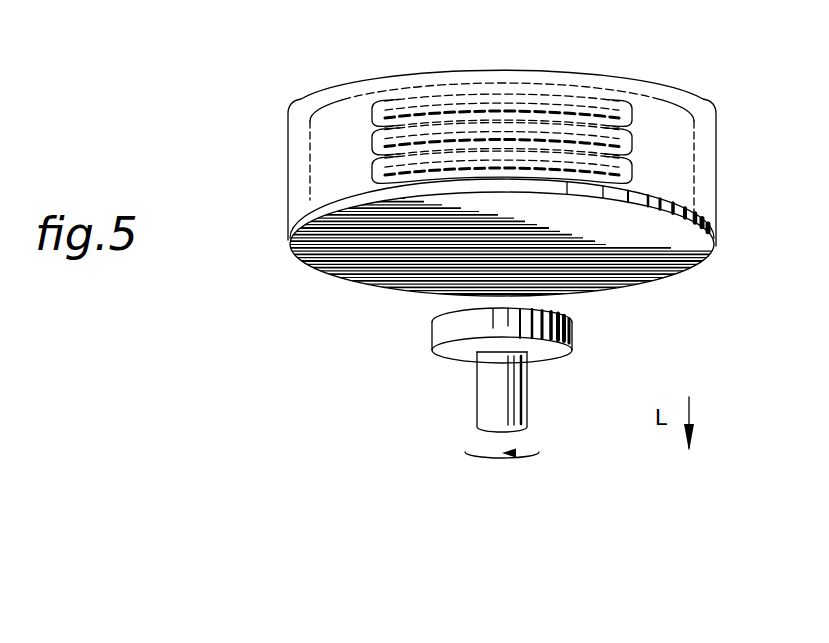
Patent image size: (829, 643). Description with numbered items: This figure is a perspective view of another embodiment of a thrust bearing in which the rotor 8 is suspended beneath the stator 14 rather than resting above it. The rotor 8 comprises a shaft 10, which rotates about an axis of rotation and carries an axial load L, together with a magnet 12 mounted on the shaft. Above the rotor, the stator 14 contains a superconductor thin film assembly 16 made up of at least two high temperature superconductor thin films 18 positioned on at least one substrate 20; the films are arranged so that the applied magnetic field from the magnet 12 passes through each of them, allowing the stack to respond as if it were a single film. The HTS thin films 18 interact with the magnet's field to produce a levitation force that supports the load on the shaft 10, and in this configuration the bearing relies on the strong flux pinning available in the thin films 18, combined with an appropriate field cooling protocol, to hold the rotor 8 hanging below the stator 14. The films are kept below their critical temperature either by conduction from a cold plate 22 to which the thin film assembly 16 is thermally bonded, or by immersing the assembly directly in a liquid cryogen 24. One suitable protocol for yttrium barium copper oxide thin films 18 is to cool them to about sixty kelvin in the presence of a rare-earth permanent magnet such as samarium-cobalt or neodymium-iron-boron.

The rotor 8 is at (329, 310).
The shaft 10 is at (526, 405).
The magnet 12 is at (438, 328).
The stator 14 is at (273, 112).
The superconductor thin film assembly 16 is at (643, 123).
The high temperature superconductor thin films 18 is at (568, 148).
The substrate 20 is at (480, 93).
The cold plate 22 is at (614, 290).
The liquid cryogen 24 is at (343, 100).